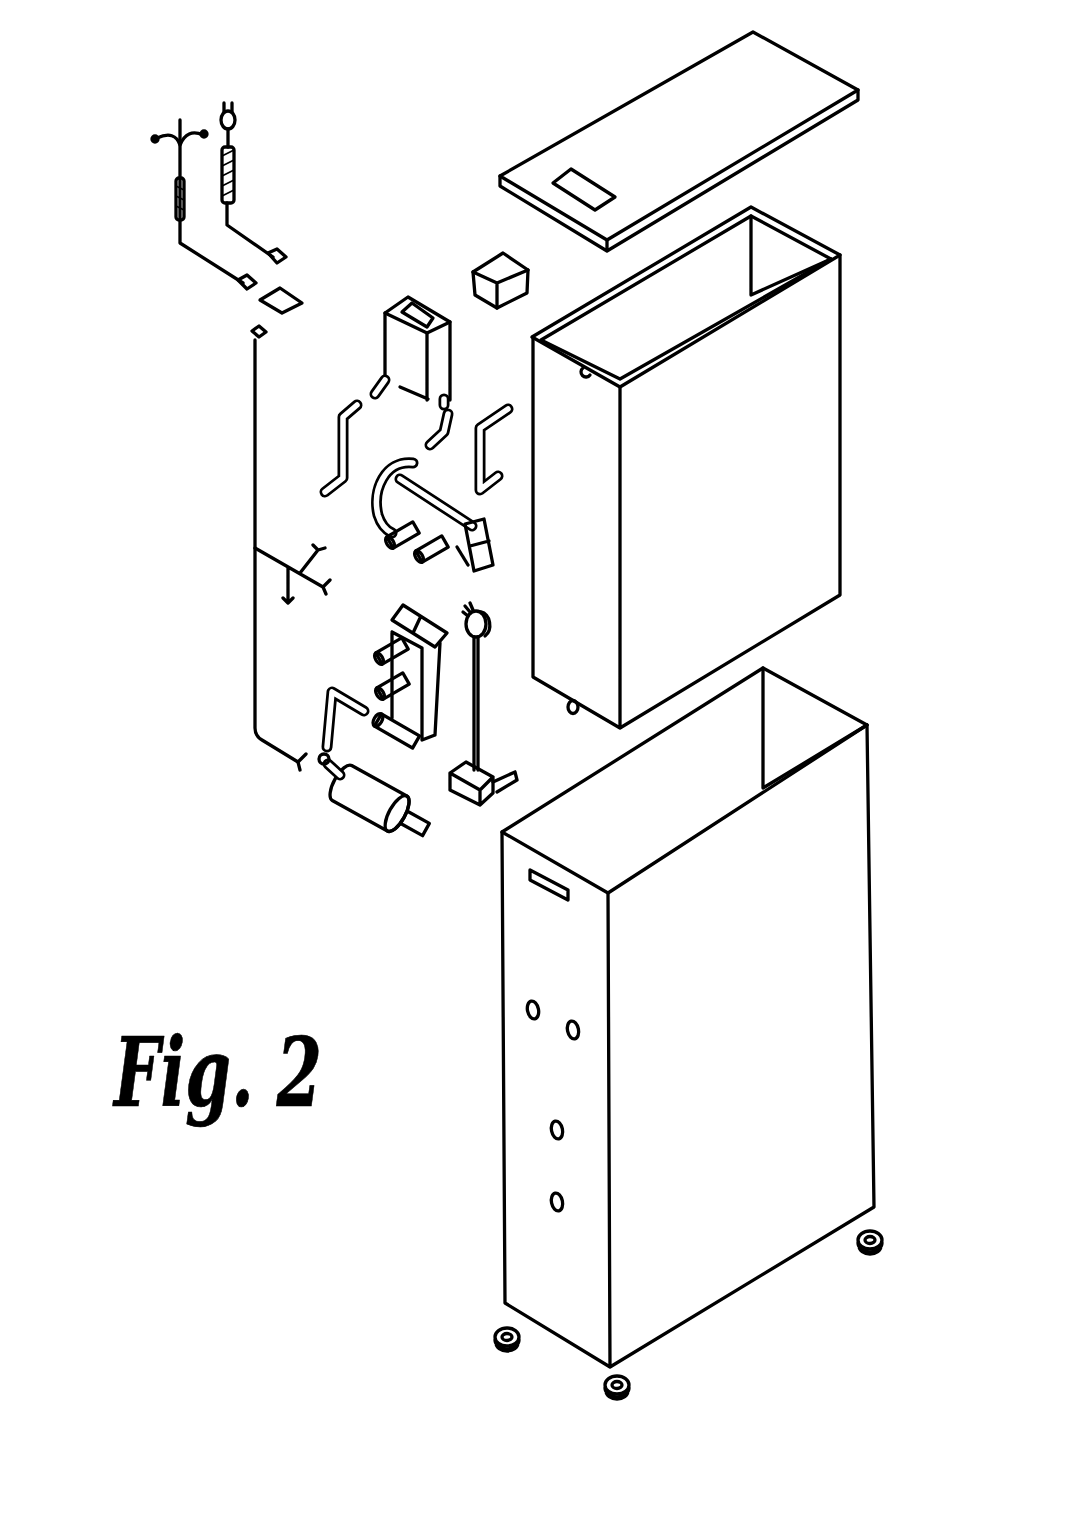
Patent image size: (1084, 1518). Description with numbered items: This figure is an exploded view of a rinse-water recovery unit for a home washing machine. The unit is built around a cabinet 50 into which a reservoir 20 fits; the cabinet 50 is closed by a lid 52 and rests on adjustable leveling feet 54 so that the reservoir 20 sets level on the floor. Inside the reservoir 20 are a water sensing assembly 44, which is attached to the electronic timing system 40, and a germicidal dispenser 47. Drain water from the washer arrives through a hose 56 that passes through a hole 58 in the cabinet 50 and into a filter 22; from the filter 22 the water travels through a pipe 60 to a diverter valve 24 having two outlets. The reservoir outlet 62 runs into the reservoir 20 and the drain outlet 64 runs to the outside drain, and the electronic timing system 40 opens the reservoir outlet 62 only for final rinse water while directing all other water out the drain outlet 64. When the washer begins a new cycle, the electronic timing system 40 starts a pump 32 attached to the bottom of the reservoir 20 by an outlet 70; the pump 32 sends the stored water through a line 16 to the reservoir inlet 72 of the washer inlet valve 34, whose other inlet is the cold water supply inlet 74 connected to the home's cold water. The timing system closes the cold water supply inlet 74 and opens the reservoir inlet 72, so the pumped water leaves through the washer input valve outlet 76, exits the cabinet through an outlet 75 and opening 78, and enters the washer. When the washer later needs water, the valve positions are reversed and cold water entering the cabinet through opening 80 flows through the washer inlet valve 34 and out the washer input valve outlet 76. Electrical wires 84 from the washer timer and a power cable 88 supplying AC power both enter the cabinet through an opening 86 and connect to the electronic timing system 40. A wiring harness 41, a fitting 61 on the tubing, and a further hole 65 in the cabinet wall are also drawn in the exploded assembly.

The line 16 is at (318, 724).
The reservoir 20 is at (723, 502).
The filter 22 is at (385, 317).
The diverter valve 24 is at (374, 490).
The pump 32 is at (362, 808).
The washer inlet valve 34 is at (410, 718).
The electronic timing system 40 is at (284, 297).
The wiring harness 41 is at (255, 507).
The water sensing assembly 44 is at (485, 634).
The germicidal dispenser 47 is at (490, 268).
The cabinet 50 is at (740, 1059).
The lid 52 is at (688, 153).
The leveling feet 54 is at (493, 1338).
The hose 56 is at (338, 412).
The hole 58 is at (527, 1012).
The pipe 60 is at (438, 426).
The elbow tube 61 is at (412, 460).
The reservoir outlet 62 is at (386, 534).
The drain outlet 64 is at (416, 556).
The hole 65 is at (568, 1040).
The outlet 70 is at (568, 708).
The reservoir inlet 72 is at (378, 726).
The cold water supply inlet 74 is at (380, 691).
The outlet 75 is at (485, 420).
The washer input valve outlet 76 is at (380, 655).
The opening 78 is at (551, 1134).
The opening 80 is at (551, 1206).
The electrical wires 84 is at (200, 258).
The opening 86 is at (537, 888).
The power cable 88 is at (237, 182).